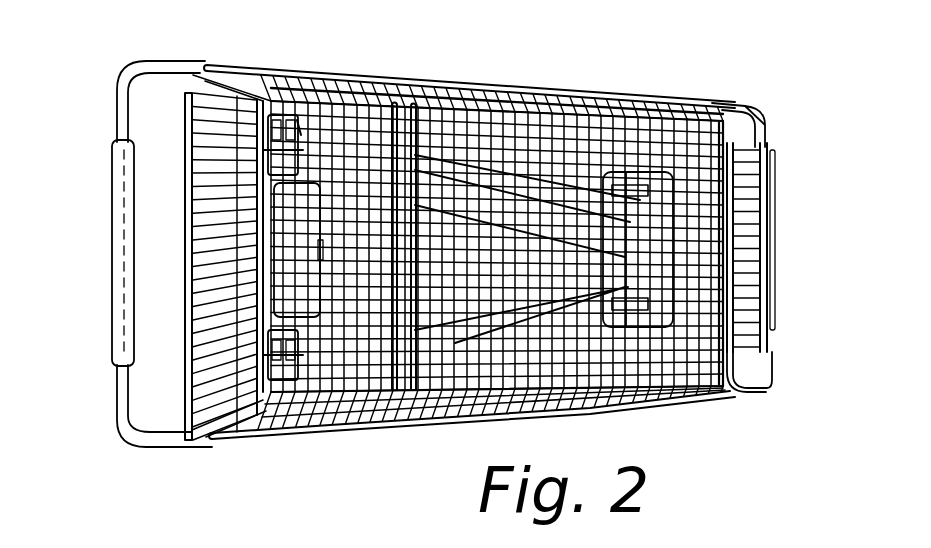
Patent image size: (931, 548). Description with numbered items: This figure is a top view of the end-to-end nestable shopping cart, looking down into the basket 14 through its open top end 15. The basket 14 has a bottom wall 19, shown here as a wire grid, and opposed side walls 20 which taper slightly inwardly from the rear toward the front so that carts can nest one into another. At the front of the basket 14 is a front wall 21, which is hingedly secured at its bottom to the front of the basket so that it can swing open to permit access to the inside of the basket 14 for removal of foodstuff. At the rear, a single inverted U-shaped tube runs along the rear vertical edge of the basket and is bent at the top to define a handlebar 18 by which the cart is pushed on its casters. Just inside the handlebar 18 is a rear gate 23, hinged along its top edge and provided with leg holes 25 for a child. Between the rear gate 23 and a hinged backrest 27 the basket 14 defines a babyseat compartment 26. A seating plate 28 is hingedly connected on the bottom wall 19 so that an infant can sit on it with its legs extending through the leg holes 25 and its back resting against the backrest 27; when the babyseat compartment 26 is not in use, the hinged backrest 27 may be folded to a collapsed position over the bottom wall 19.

The basket 14 is at (584, 90).
The open top end 15 is at (629, 167).
The handlebar 18 is at (132, 191).
The bottom wall 19 is at (535, 296).
The side walls 20 is at (424, 100).
The front wall 21 is at (749, 208).
The rear gate 23 is at (218, 150).
The leg holes 25 is at (276, 118).
The babyseat compartment 26 is at (351, 140).
The hinged backrest 27 is at (413, 165).
The seating plate 28 is at (293, 255).